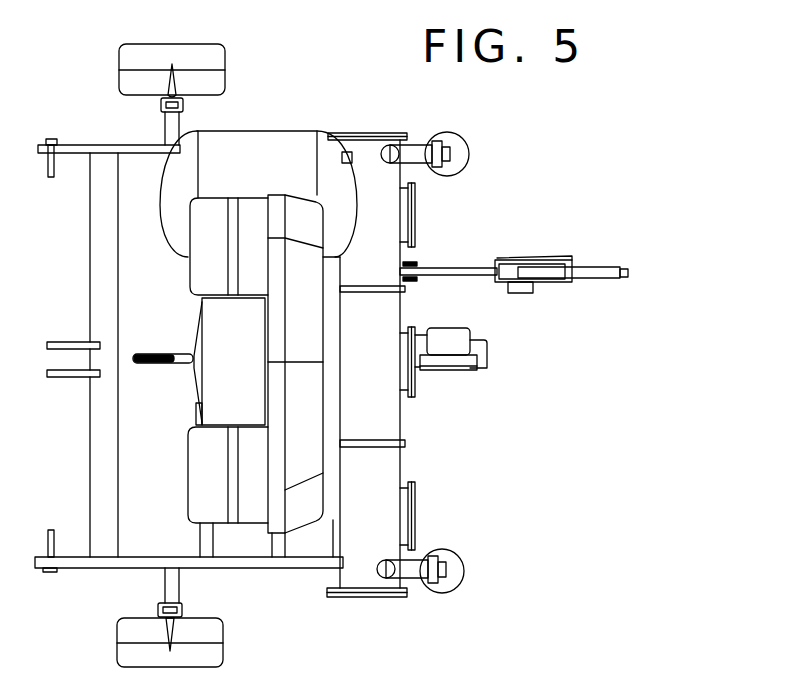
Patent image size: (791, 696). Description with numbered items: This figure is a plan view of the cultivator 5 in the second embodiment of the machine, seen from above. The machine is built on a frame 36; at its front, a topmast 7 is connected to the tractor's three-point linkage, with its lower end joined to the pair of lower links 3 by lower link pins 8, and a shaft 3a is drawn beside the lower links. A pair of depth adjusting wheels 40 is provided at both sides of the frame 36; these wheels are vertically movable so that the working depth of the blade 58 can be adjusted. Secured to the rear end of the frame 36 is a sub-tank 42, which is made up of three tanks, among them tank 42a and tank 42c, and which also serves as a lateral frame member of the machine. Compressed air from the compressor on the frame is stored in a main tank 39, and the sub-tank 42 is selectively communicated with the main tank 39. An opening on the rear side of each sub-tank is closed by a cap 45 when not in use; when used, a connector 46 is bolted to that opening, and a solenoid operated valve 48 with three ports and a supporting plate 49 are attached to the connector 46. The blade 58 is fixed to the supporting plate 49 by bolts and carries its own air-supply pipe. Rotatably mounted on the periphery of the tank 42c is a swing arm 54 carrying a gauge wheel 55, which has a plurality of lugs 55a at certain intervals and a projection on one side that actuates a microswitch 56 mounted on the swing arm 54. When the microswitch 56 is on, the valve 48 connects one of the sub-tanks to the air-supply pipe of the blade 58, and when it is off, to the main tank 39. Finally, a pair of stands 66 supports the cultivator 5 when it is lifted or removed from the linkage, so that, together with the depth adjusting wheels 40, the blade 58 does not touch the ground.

The lower links 3 is at (200, 405).
The drum shaft 3a is at (148, 364).
The cultivator 5 is at (275, 163).
The topmast 7 is at (47, 343).
The lower link pins 8 is at (52, 177).
The frame 36 is at (150, 556).
The main tank 39 is at (350, 224).
The depth adjusting wheels 40 is at (128, 90).
The sub-tank 42 is at (406, 465).
The tank 42a is at (362, 596).
The tank 42c is at (368, 150).
The cap 45 is at (416, 207).
The connector 46 is at (415, 388).
The solenoid operated valve 48 is at (462, 333).
The supporting plate 49 is at (455, 371).
The swing arm 54 is at (458, 266).
The gauge wheel 55 is at (603, 263).
The lugs 55a is at (626, 268).
The microswitch 56 is at (530, 294).
The blade 58 is at (472, 368).
The stands 66 is at (465, 160).